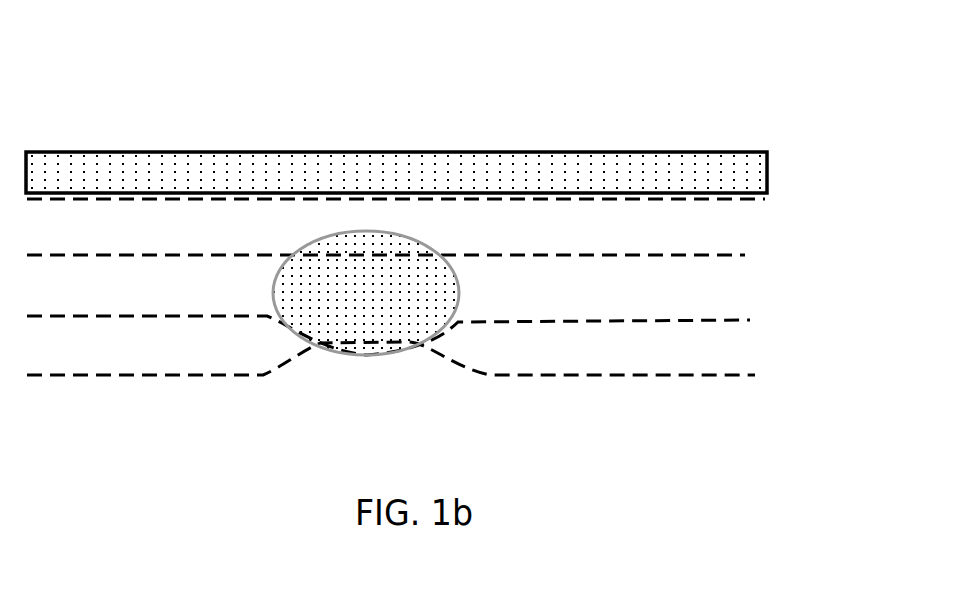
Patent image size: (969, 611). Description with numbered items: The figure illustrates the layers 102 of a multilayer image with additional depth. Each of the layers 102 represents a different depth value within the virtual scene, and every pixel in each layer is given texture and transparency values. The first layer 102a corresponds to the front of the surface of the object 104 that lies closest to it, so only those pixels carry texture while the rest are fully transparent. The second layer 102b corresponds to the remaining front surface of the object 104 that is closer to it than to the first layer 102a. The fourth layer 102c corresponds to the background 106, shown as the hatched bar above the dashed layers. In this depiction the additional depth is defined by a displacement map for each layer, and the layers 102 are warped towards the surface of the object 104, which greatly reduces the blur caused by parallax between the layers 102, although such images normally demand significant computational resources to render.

The background 106 is at (698, 152).
The fourth layer 102c is at (755, 202).
The layers 102 is at (758, 256).
The second layer 102b is at (762, 315).
The first layer 102a is at (765, 375).
The object 104 is at (458, 292).